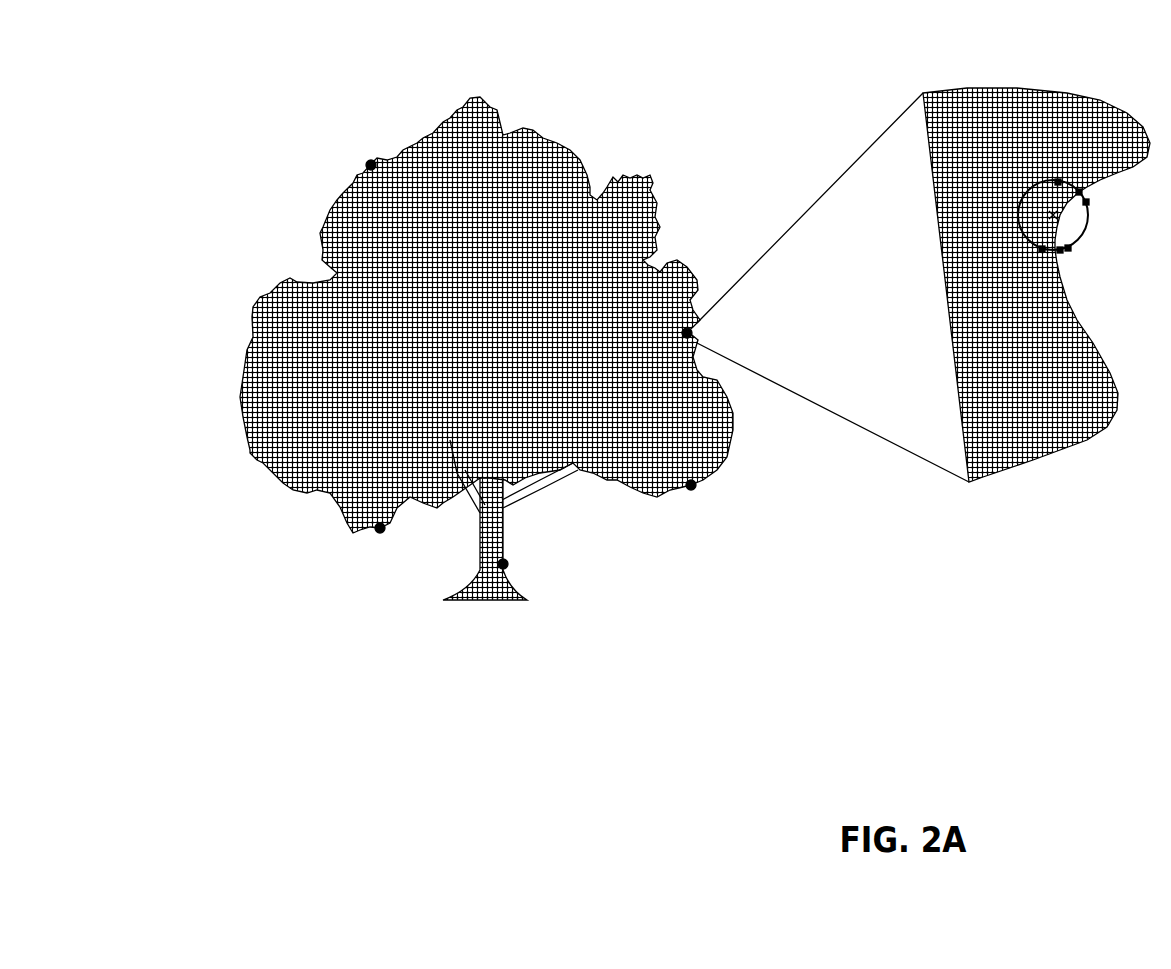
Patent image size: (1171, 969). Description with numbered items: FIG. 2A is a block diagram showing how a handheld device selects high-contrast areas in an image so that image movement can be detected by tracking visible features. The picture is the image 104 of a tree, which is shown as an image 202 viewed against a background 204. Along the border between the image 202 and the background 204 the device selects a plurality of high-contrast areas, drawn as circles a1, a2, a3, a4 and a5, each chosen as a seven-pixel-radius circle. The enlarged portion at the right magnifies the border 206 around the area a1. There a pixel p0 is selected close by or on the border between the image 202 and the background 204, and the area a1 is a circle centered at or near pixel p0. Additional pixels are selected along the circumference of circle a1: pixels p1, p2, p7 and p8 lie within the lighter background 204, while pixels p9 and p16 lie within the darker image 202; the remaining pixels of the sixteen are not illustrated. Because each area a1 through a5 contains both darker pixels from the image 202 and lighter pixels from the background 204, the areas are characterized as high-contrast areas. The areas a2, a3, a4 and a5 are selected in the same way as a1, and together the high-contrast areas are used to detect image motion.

The image 104 is at (486, 331).
The image 202 is at (505, 193).
The background 204 is at (603, 129).
The object boundary 206 is at (1110, 100).
The high-contrast area a1 is at (687, 333).
The high-contrast area a2 is at (371, 165).
The high-contrast area a3 is at (691, 485).
The high-contrast area a4 is at (503, 564).
The high-contrast area a5 is at (380, 528).
The pixel p0 is at (1052, 227).
The pixel p1 is at (1090, 185).
The pixel p2 is at (1101, 201).
The pixel p7 is at (1082, 243).
The pixel p8 is at (1067, 262).
The pixel p9 is at (1027, 251).
The pixel p16 is at (1055, 172).